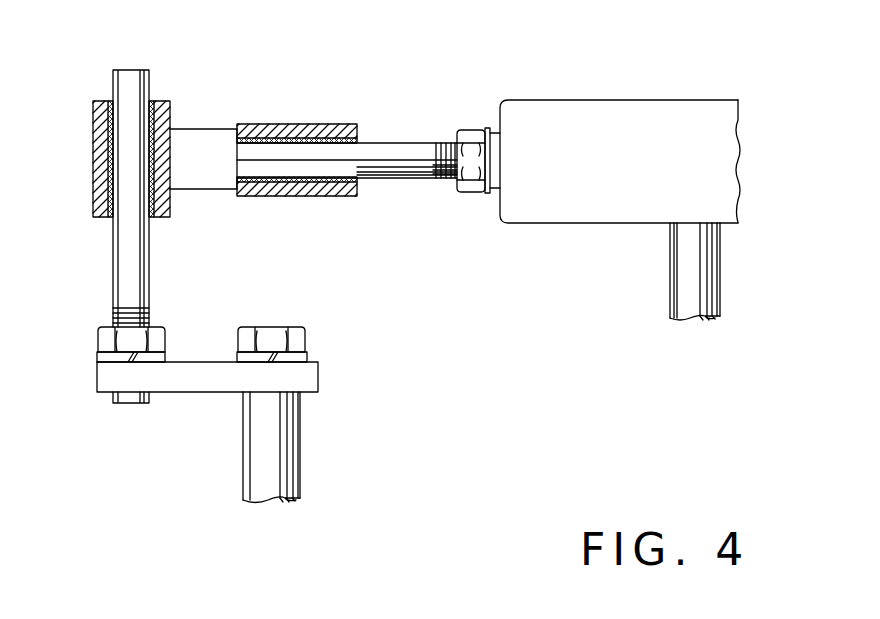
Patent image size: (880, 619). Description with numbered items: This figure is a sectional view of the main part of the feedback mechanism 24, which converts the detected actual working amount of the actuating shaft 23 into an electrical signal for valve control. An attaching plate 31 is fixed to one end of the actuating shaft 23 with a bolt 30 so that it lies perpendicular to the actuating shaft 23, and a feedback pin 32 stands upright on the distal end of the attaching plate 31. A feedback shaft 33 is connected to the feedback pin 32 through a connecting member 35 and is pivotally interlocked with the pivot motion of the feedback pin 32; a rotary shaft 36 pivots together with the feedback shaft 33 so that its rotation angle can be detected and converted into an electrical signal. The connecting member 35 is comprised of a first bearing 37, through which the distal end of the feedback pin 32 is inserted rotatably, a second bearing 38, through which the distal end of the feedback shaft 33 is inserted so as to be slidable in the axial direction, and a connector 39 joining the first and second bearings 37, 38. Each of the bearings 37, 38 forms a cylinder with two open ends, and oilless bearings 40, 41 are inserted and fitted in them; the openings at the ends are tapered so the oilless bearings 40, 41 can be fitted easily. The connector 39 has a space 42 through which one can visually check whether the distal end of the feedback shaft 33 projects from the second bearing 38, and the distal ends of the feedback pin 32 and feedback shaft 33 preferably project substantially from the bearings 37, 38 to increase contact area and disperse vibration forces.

The actuating shaft 23 is at (300, 448).
The feedback mechanism 24 is at (493, 60).
The bolt 30 is at (305, 335).
The attaching plate 31 is at (317, 373).
The feedback pin 32 is at (113, 80).
The feedback shaft 33 is at (390, 150).
The connecting member 35 is at (327, 101).
The rotary shaft 36 is at (680, 287).
The first bearing 37 is at (97, 177).
The second bearing 38 is at (305, 197).
The connector 39 is at (193, 190).
The oilless bearing 40 is at (112, 130).
The oilless bearing 41 is at (285, 138).
The space 42 is at (208, 137).